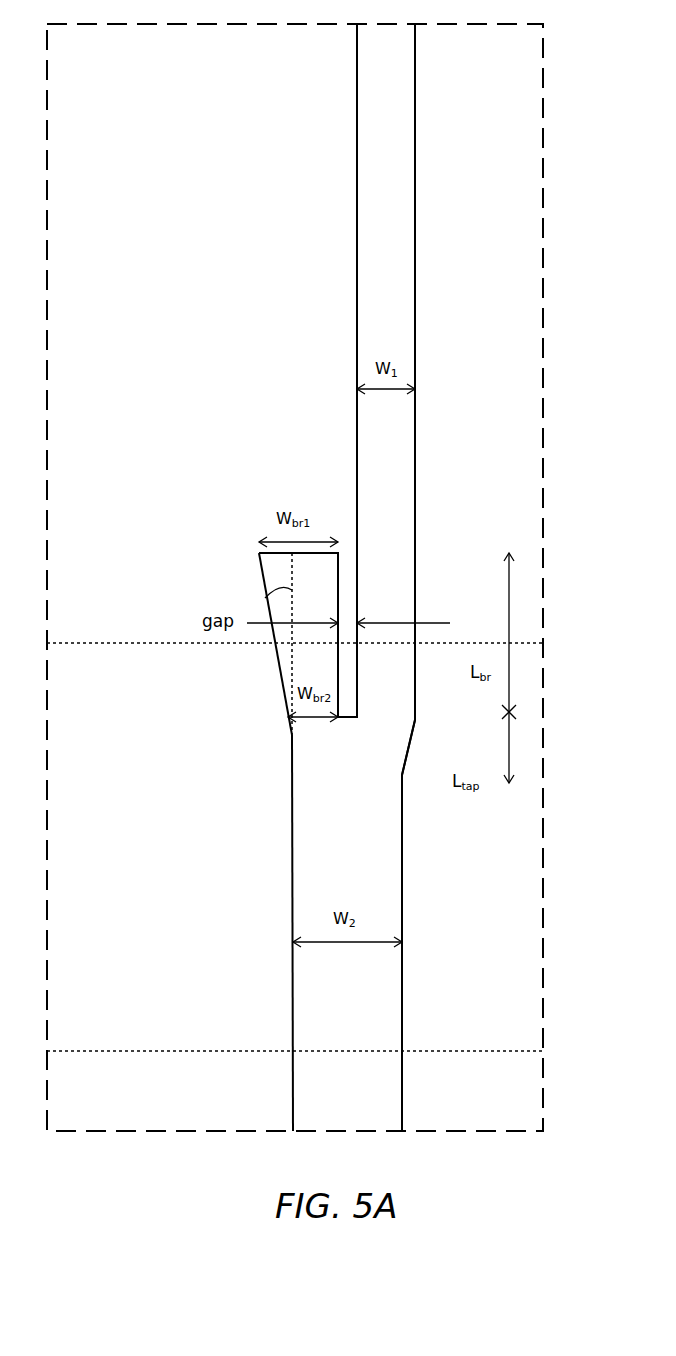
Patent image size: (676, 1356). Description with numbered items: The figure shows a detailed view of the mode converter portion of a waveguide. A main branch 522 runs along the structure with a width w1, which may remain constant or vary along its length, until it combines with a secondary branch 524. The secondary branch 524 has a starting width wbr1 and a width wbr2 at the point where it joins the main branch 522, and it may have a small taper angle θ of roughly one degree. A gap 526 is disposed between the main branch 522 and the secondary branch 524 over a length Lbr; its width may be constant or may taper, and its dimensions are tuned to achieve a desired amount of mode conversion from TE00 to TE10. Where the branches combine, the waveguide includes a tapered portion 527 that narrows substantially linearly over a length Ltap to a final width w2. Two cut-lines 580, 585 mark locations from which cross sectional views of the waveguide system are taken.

The main branch 522 is at (393, 537).
The secondary branch 524 is at (290, 655).
The gap 526 is at (338, 505).
The tapered portion 527 is at (410, 748).
The cut-line 580 is at (146, 1051).
The cut-line 585 is at (148, 643).